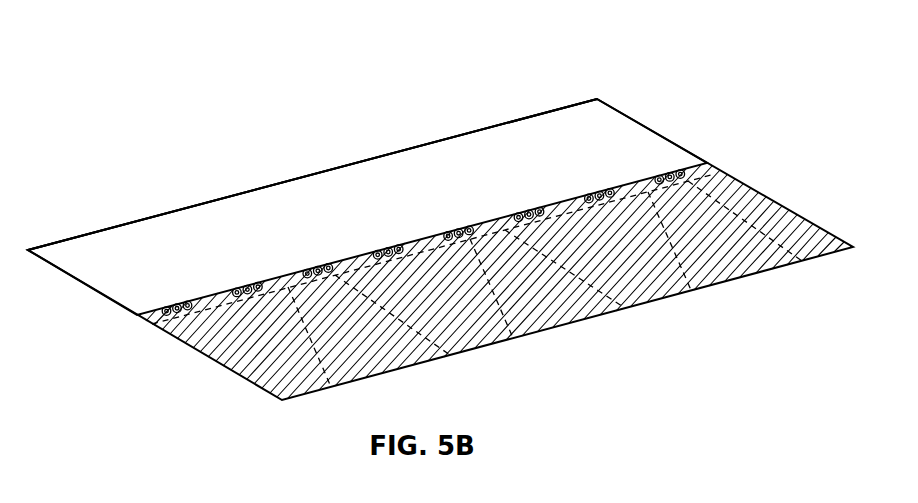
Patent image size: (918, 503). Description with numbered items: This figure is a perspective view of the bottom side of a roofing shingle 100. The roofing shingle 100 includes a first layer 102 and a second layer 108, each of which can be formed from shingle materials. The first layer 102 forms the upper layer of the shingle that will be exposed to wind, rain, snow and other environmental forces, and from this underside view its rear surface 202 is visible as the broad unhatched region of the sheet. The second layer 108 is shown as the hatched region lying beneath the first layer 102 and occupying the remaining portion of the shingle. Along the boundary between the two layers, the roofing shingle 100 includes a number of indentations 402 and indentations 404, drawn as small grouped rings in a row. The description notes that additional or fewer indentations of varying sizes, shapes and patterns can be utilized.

The roofing shingle 100 is at (202, 66).
The first layer 102 is at (171, 234).
The rear surface 202 is at (78, 247).
The second layer 108 is at (212, 352).
The indentations 402 is at (245, 287).
The indentations 404 is at (396, 244).